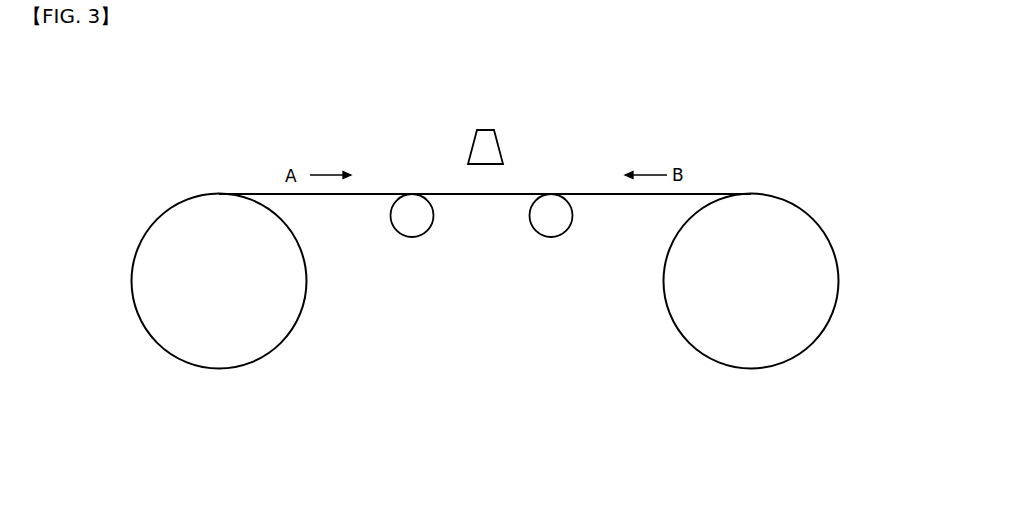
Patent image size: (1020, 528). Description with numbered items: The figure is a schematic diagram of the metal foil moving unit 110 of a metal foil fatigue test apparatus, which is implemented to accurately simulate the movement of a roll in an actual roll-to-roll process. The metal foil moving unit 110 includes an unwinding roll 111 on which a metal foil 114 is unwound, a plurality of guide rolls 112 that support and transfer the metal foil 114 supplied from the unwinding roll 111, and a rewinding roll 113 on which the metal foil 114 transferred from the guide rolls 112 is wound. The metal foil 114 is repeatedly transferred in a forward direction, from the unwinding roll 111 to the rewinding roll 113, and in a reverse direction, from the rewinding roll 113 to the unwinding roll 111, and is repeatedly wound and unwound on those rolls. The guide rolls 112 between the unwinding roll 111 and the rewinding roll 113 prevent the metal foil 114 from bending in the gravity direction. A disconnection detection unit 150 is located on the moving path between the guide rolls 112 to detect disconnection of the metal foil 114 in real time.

The metal foil moving unit 110 is at (182, 190).
The unwinding roll 111 is at (145, 322).
The guide rolls 112 is at (413, 237).
The rewinding roll 113 is at (825, 327).
The metal foil 114 is at (492, 196).
The disconnection detection unit 150 is at (497, 132).